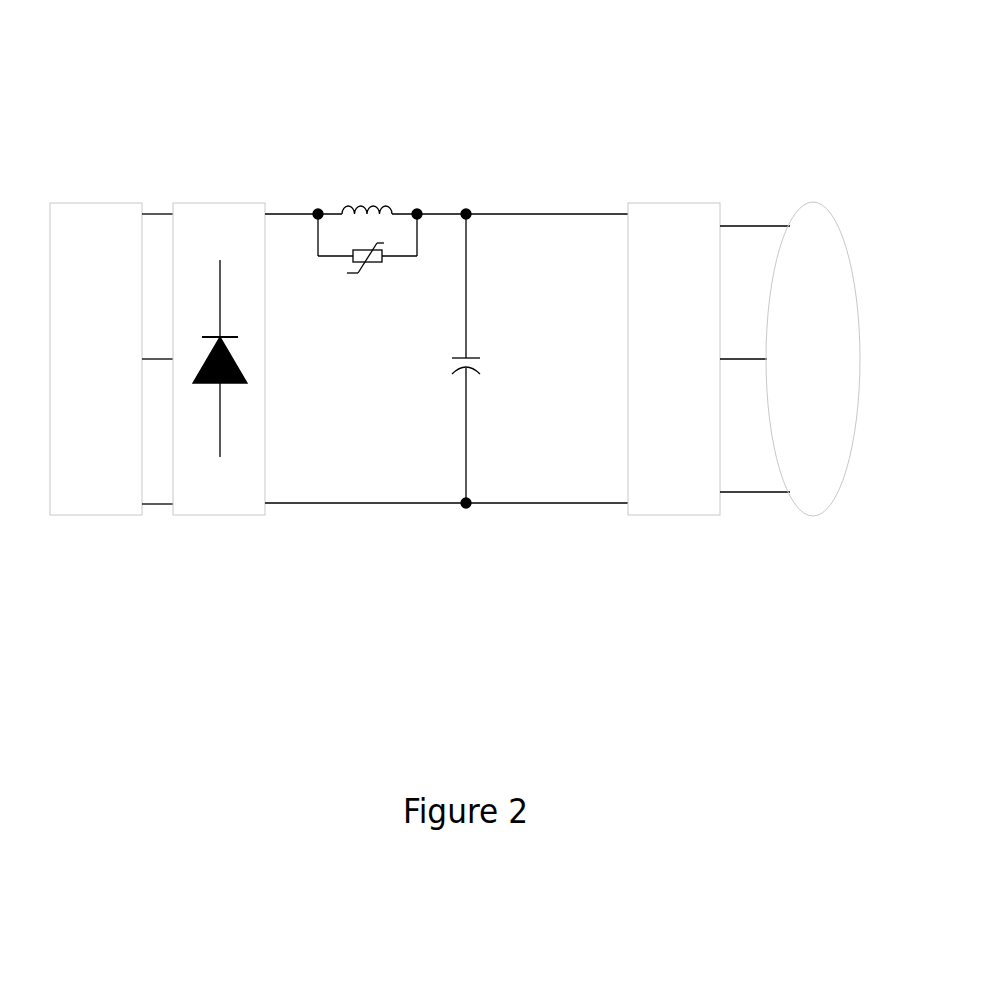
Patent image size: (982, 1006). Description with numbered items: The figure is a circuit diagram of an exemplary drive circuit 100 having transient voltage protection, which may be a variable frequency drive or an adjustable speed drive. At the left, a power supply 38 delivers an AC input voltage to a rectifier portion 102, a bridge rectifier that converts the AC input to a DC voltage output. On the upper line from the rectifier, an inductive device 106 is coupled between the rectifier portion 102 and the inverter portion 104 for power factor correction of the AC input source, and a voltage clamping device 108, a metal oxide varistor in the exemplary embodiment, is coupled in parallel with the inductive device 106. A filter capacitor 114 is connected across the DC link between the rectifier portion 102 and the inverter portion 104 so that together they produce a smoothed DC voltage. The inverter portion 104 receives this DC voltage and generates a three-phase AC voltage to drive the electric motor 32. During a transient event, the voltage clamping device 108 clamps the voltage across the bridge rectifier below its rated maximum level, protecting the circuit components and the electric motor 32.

The drive circuit 100 is at (241, 55).
The power supply 38 is at (84, 355).
The rectifier portion 102 is at (197, 515).
The inductive device 106 is at (350, 205).
The voltage clamping device 108 is at (370, 268).
The filter capacitor 114 is at (452, 358).
The inverter portion 104 is at (655, 364).
The electric motor 32 is at (801, 364).